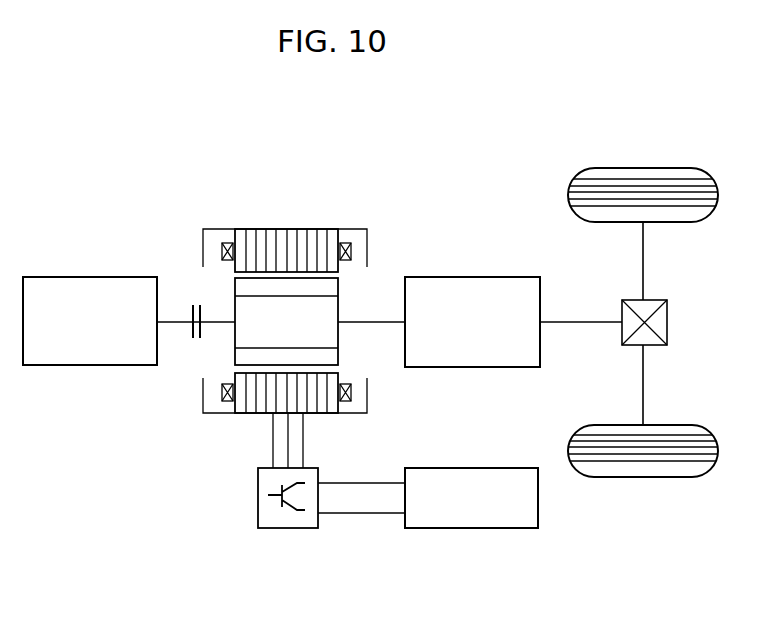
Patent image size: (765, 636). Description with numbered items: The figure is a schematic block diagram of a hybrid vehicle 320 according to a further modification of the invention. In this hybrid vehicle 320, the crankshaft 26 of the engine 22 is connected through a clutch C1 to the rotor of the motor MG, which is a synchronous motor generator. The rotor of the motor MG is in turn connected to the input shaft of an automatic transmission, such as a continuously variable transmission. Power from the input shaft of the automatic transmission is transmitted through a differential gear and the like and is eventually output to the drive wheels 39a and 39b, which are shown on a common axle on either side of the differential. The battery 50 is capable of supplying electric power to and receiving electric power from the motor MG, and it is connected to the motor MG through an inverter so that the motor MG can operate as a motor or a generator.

The engine 22 is at (92, 277).
The clutch C1 is at (190, 300).
The crankshaft 26 is at (180, 322).
The motor MG is at (287, 229).
The hybrid vehicle 320 is at (390, 155).
The drive wheel 39a is at (644, 168).
The drive wheel 39b is at (642, 477).
The battery 50 is at (470, 528).